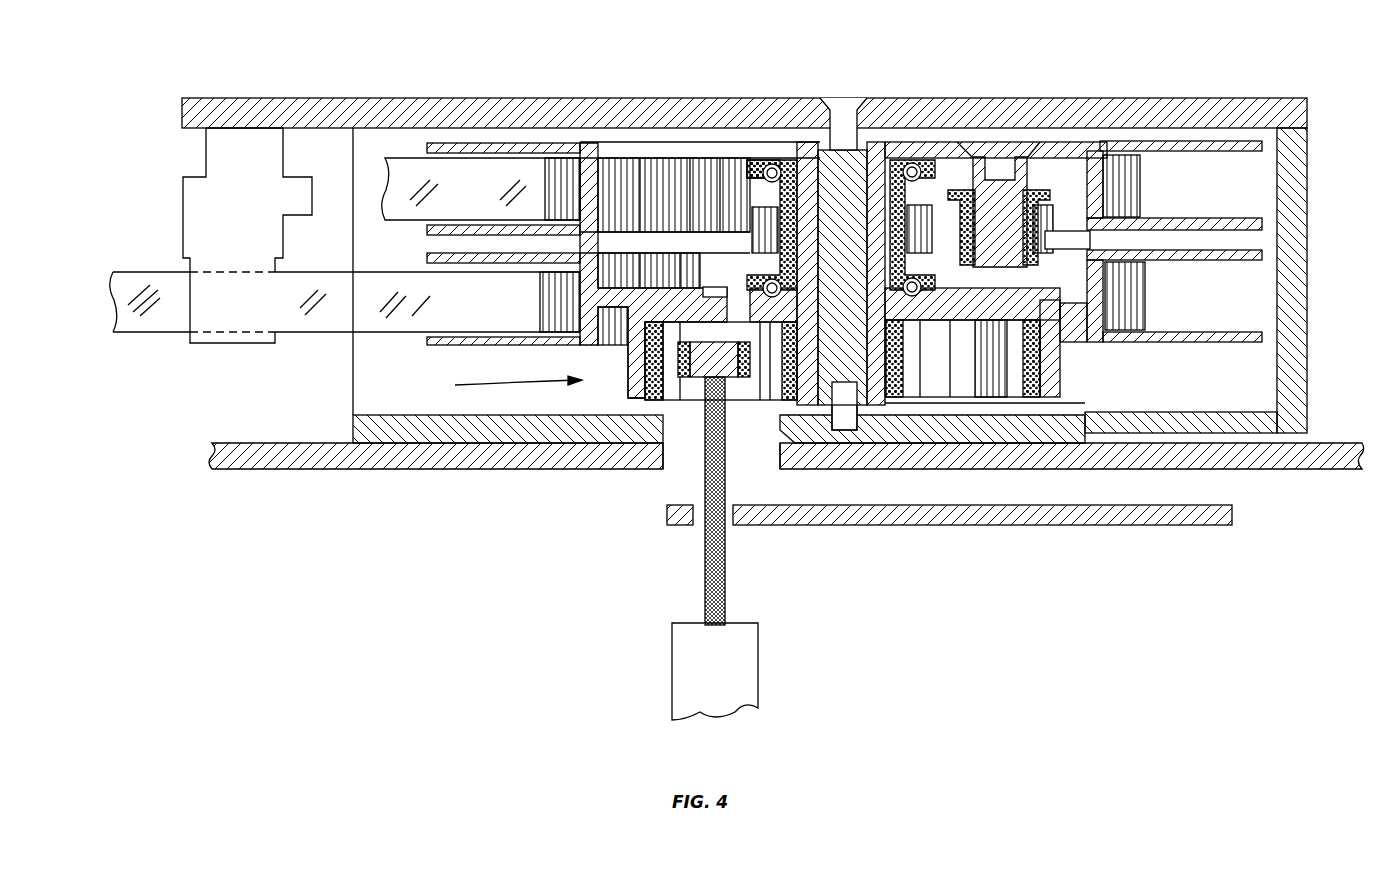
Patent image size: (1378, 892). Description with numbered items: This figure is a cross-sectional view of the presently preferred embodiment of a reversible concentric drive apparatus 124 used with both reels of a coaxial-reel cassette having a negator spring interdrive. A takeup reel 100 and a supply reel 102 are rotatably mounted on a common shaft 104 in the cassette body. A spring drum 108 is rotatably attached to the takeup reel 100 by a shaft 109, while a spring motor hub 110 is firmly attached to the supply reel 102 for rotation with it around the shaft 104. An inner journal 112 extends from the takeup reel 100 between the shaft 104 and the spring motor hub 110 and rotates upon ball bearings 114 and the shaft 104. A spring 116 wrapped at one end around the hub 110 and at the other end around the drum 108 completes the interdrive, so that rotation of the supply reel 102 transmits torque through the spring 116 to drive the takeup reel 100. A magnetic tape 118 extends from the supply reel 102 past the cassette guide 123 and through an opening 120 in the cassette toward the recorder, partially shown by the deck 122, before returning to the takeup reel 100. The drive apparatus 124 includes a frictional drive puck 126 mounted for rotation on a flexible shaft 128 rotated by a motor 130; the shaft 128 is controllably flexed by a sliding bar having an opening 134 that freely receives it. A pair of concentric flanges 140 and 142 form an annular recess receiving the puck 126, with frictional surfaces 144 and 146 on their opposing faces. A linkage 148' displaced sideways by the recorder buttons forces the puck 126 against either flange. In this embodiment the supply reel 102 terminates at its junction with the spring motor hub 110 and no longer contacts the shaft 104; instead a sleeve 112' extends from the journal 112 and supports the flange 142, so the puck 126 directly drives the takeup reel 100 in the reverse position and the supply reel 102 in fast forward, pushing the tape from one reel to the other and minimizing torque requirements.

The takeup reel 100 is at (683, 176).
The supply reel 102 is at (622, 300).
The shaft 104 is at (846, 185).
The spring drum 108 is at (1037, 187).
The shaft 109 is at (1003, 193).
The spring motor hub 110 is at (752, 158).
The inner journal 112 is at (755, 225).
The sleeve 112' is at (962, 358).
The ball bearings 114 is at (764, 158).
The spring 116 is at (940, 218).
The magnetic tape 118 is at (475, 197).
The opening 120 is at (353, 378).
The deck 122 is at (248, 470).
The cassette guide 123 is at (190, 240).
The reversible concentric drive apparatus 124 is at (497, 387).
The frictional drive puck 126 is at (692, 400).
The flexible shaft 128 is at (725, 574).
The motor 130 is at (760, 645).
The opening 134 is at (733, 513).
The flange 140 is at (678, 352).
The flange 142 is at (852, 432).
The frictional surface 144 is at (645, 398).
The frictional surface 146 is at (803, 428).
The linkage 148' is at (949, 539).